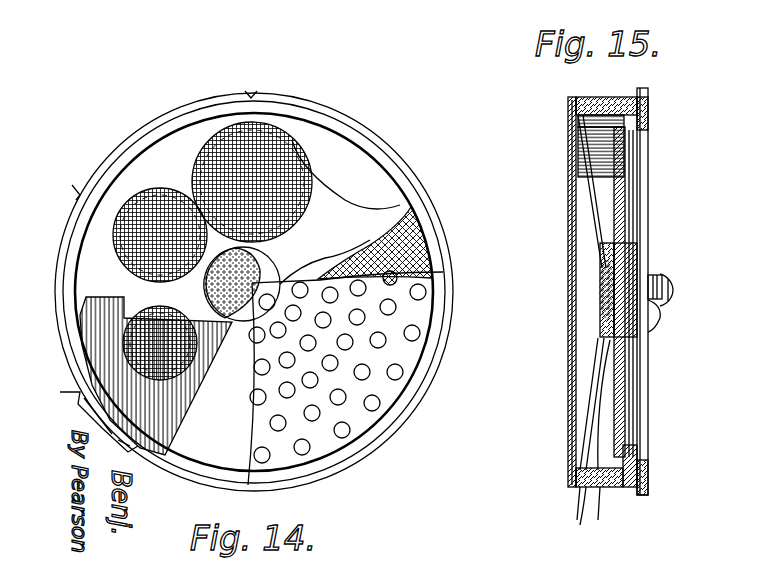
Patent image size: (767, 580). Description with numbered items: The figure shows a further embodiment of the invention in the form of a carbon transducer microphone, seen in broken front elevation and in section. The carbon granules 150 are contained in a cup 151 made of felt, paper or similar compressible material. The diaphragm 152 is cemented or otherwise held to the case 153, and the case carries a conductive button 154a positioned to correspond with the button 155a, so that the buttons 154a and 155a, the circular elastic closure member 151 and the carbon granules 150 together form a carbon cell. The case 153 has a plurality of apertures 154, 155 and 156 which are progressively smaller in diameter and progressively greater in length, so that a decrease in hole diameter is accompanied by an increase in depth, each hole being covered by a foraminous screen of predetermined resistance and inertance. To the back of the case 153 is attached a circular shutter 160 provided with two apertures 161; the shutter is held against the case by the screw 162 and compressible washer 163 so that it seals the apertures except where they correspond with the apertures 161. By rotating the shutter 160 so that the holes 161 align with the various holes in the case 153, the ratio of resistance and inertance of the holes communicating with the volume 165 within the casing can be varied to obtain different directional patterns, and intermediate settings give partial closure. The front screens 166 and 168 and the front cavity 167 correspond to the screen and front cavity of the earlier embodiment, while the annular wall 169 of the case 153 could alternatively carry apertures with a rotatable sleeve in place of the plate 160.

In FIG. 15, the carbon granules 150 is at (640, 250).
In FIG. 14, the cup 151 is at (262, 248).
In FIG. 15, the cup 151 is at (607, 243).
In FIG. 15, the diaphragm 152 is at (568, 213).
In FIG. 14, the case 153 is at (180, 150).
In FIG. 15, the case 153 is at (618, 100).
In FIG. 14, the aperture 154 is at (295, 140).
In FIG. 15, the aperture 154 is at (648, 148).
In FIG. 15, the conductive button 154a is at (647, 265).
In FIG. 14, the aperture 155 is at (148, 205).
In FIG. 14, the button 155a is at (258, 258).
In FIG. 15, the button 155a is at (603, 272).
In FIG. 14, the aperture 156 is at (148, 318).
In FIG. 14, the circular shutter 160 is at (365, 160).
In FIG. 15, the circular shutter 160 is at (648, 105).
In FIG. 15, the apertures 161 is at (648, 168).
In FIG. 14, the screw 162 is at (96, 445).
In FIG. 15, the screw 162 is at (678, 288).
In FIG. 14, the compressible washer 163 is at (258, 92).
In FIG. 15, the compressible washer 163 is at (650, 312).
In FIG. 15, the volume 165 is at (597, 187).
In FIG. 14, the front screen 166 is at (438, 240).
In FIG. 15, the front screen 166 is at (567, 303).
In FIG. 15, the front cavity 167 is at (600, 333).
In FIG. 14, the front screen 168 is at (355, 420).
In FIG. 15, the front screen 168 is at (567, 315).
In FIG. 15, the annular wall 169 is at (608, 87).